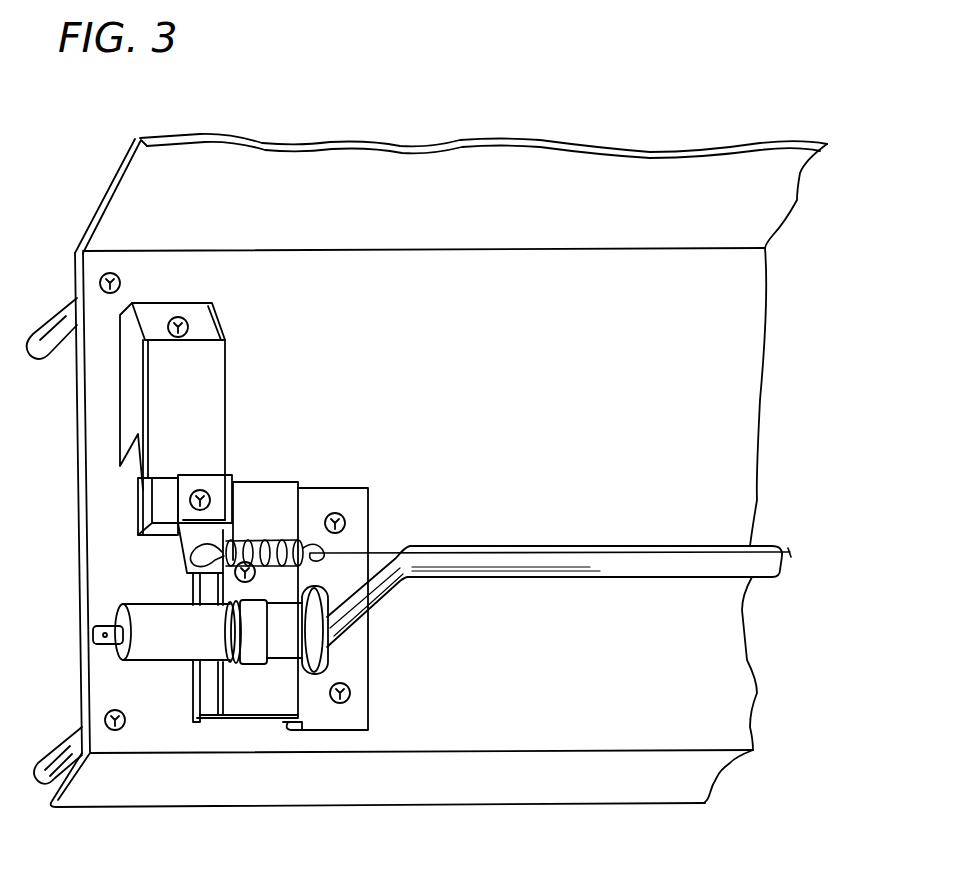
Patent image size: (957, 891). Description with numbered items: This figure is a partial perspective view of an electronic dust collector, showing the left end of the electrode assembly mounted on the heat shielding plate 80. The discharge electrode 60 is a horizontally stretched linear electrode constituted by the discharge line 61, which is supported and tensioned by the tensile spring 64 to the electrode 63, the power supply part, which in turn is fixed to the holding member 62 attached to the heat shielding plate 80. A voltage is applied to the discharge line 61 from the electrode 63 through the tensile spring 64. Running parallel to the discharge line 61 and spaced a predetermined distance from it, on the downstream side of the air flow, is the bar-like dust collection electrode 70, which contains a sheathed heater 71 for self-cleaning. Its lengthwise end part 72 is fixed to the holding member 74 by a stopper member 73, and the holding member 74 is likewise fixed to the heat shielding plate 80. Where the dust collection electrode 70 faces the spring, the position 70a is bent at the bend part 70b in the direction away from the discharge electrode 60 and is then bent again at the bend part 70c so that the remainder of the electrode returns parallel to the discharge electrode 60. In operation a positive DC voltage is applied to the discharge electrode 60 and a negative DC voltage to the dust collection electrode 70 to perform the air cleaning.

The heat shielding plate 80 is at (744, 292).
The holding member 62 is at (217, 383).
The electrode 63 is at (203, 482).
The tensile spring 64 is at (266, 548).
The discharge electrode 60 is at (382, 540).
The discharge line 61 is at (645, 552).
The dust collection electrode 70 is at (497, 590).
The position opposed to the extension spring 70a is at (313, 682).
The bend part 70b is at (413, 588).
The bend part 70c is at (350, 653).
The sheathed heater 71 is at (648, 566).
The lengthwise end part 72 is at (147, 657).
The stopper member 73 is at (245, 657).
The holding member 74 is at (267, 707).